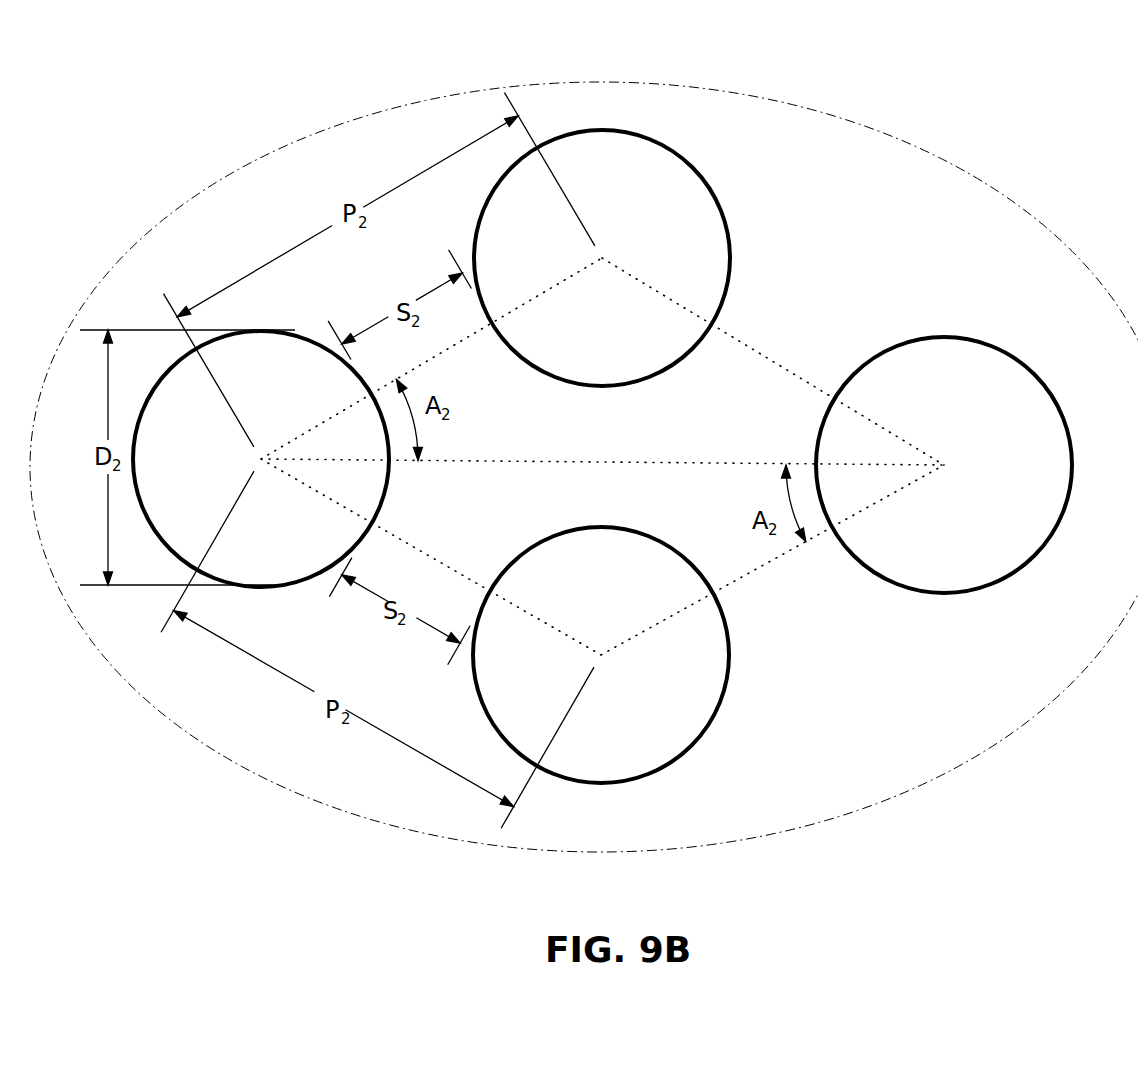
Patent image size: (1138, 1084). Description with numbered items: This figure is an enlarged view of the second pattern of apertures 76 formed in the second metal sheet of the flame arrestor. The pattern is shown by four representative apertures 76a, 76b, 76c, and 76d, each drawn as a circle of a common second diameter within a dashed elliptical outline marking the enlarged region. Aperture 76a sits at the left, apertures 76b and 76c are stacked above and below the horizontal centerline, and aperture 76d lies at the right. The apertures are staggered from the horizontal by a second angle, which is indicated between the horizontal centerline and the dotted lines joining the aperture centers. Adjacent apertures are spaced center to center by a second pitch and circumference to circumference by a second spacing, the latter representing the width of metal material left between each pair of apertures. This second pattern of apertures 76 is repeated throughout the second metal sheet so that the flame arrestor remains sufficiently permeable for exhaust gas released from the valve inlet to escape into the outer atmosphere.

The second pattern of apertures 76 is at (128, 74).
The aperture 76a is at (294, 332).
The aperture 76b is at (695, 170).
The aperture 76c is at (700, 738).
The aperture 76d is at (982, 345).